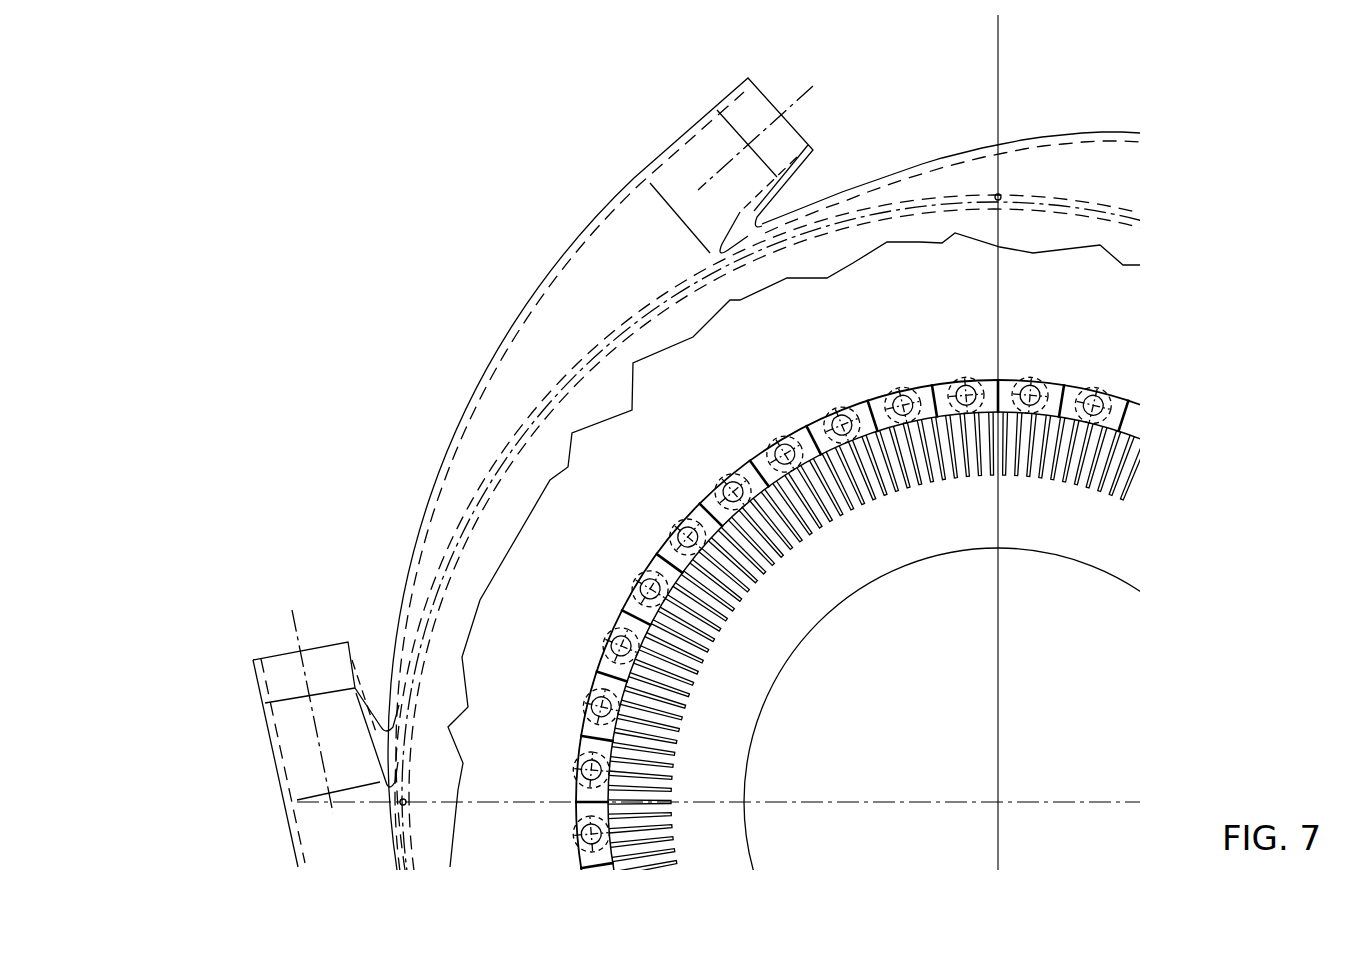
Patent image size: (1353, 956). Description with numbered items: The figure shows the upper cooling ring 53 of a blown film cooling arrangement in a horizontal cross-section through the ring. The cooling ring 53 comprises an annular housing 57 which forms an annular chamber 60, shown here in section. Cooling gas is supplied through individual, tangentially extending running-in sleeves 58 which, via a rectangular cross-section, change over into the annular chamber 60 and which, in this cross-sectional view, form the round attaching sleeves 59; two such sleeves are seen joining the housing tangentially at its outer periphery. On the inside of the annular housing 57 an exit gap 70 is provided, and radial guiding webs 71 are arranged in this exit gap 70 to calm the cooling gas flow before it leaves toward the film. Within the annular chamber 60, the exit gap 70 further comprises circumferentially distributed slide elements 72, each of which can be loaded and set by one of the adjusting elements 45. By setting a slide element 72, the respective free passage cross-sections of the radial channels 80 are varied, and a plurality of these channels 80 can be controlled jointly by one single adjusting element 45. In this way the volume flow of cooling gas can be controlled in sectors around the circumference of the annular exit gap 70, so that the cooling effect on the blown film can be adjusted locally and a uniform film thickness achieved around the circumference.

The adjusting element 45 is at (843, 599).
The cooling ring 53 is at (393, 422).
The annular housing 57 is at (518, 427).
The running-in sleeve 58 is at (537, 298).
The attaching sleeve 59 is at (747, 107).
The annular chamber 60 is at (716, 423).
The exit gap 70 is at (978, 535).
The radial guiding web 71 is at (878, 651).
The slide element 72 is at (964, 651).
The radial channel 80 is at (885, 489).